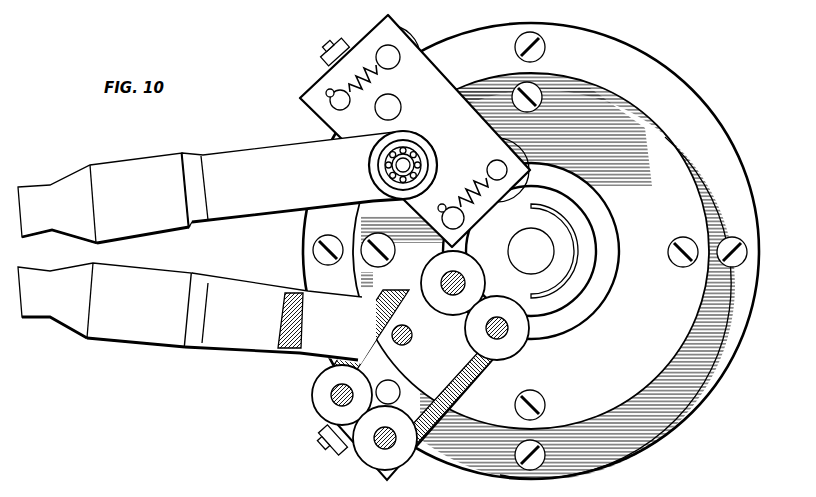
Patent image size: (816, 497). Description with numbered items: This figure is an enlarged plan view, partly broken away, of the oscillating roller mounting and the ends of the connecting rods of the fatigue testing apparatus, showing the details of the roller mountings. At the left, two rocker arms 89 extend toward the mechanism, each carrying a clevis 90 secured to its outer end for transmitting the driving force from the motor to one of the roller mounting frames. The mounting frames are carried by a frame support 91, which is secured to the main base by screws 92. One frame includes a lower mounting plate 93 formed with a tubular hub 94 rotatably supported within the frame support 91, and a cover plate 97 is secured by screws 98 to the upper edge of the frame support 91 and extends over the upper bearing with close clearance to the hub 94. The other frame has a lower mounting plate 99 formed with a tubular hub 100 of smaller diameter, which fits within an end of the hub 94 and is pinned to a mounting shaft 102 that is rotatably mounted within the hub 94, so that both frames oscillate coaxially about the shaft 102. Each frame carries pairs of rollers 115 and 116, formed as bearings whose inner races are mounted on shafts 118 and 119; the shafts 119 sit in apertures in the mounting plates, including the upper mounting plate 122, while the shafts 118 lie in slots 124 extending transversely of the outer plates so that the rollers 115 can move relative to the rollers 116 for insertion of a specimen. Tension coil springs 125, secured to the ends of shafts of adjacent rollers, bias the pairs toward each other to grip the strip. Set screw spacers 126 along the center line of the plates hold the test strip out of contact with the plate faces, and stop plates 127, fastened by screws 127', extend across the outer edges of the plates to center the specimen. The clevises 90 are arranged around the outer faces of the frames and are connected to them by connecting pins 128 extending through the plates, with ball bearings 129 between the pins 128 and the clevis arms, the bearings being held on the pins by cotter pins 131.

The rocker arm 89 is at (41, 197).
The clevis 90 is at (261, 208).
The frame support 91 is at (663, 424).
The screws 92 is at (742, 249).
The lower mounting plate 93 is at (535, 315).
The tubular hub 94 is at (580, 277).
The cover plate 97 is at (643, 370).
The screws 98 is at (692, 242).
The lower mounting plate 99 is at (532, 171).
The tubular hub 100 is at (555, 223).
The mounting shaft 102 is at (520, 243).
The rollers 115 is at (438, 267).
The rollers 116 is at (412, 32).
The shafts 118 is at (298, 98).
The shafts 119 is at (388, 47).
The upper mounting plate 122 is at (318, 103).
The slots 124 is at (332, 115).
The tension coil springs 125 is at (385, 73).
The set screw spacers 126 is at (401, 107).
The stop plates 127 is at (318, 263).
The screws 127' is at (330, 241).
The connecting pins 128 is at (425, 160).
The ball bearings 129 is at (412, 149).
The cotter pins 131 is at (396, 170).